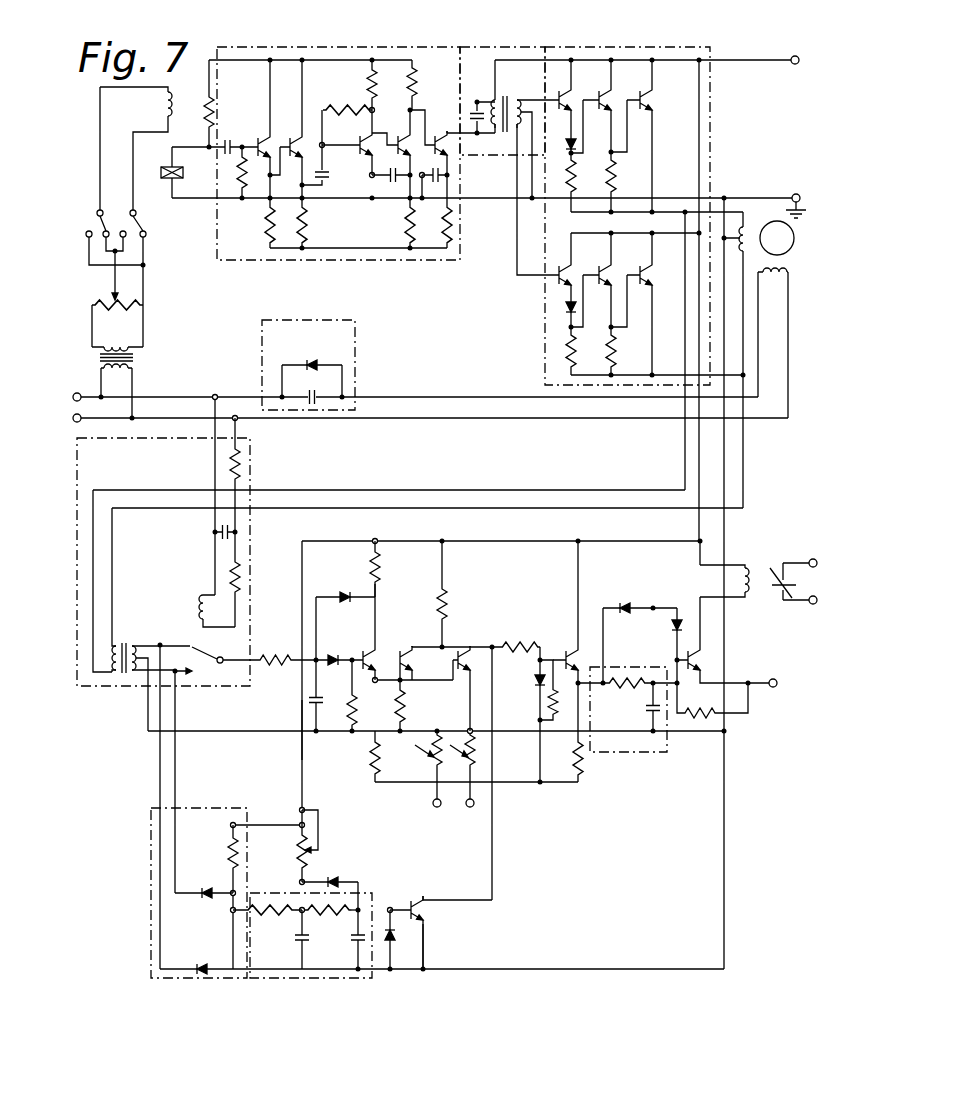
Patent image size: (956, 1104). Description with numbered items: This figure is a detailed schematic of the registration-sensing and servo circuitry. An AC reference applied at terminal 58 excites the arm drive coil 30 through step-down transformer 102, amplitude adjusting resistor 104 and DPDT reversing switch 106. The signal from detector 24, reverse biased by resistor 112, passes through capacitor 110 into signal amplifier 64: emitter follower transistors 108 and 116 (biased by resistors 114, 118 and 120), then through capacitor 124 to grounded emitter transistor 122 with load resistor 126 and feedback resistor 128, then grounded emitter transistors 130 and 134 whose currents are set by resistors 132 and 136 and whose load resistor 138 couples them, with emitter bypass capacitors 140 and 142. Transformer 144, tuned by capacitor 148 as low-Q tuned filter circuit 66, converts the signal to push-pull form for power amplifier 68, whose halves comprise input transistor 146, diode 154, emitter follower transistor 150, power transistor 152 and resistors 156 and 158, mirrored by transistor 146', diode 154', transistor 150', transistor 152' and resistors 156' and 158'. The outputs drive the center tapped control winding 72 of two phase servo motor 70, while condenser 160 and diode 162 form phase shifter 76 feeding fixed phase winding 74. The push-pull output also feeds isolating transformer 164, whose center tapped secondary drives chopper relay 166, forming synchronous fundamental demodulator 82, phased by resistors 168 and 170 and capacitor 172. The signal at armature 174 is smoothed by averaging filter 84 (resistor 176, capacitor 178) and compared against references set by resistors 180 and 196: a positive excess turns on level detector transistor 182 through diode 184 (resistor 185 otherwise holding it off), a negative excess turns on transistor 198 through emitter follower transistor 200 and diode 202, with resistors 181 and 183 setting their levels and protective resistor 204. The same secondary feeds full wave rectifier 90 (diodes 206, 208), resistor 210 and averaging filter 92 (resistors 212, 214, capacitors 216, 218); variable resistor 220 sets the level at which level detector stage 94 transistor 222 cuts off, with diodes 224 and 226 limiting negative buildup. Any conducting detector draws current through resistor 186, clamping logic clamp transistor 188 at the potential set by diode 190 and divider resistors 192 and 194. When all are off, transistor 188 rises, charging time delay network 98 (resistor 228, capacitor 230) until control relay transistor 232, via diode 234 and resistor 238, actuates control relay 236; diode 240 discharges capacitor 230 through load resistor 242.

The detector 24 is at (168, 167).
The arm drive coil 30 is at (168, 106).
The terminal 58 is at (72, 397).
The signal amplifier 64 is at (327, 46).
The low-Q tuned filter circuit 66 is at (478, 43).
The power amplifier 68 is at (680, 45).
The two phase servo motor 70 is at (816, 240).
The control winding 72 is at (746, 226).
The fixed phase winding 74 is at (774, 276).
The phase shifter 76 is at (262, 342).
The synchronous fundamental demodulator 82 is at (112, 688).
The averaging filter 84 is at (298, 722).
The full wave rectifier 90 is at (166, 978).
The averaging filter 92 is at (280, 978).
The level detector stage 94 is at (432, 926).
The time delay network 98 is at (657, 754).
The step-down transformer 102 is at (132, 357).
The amplitude adjusting resistor 104 is at (96, 303).
The DPDT reversing switch 106 is at (96, 210).
The emitter follower transistor 108 is at (262, 131).
The capacitor 110 is at (228, 139).
The resistor 112 is at (207, 98).
The resistor 114 is at (240, 172).
The emitter follower transistor 116 is at (293, 133).
The resistor 118 is at (268, 212).
The resistor 120 is at (304, 212).
The grounded emitter transistor 122 is at (368, 158).
The capacitor 124 is at (326, 180).
The load resistor 126 is at (370, 82).
The feedback resistor 128 is at (340, 114).
The grounded emitter transistor 130 is at (400, 131).
The resistor 132 is at (408, 230).
The grounded emitter transistor 134 is at (447, 131).
The resistor 136 is at (449, 222).
The load resistor 138 is at (414, 82).
The emitter bypass capacitor 140 is at (388, 180).
The emitter bypass capacitor 142 is at (440, 178).
The transformer 144 is at (508, 96).
The input transistor 146 is at (580, 99).
The capacitor 148 is at (477, 102).
The emitter follower transistor 150 is at (608, 106).
The power transistor 152 is at (649, 136).
The diode 154 is at (586, 153).
The resistor 156 is at (562, 189).
The resistor 158 is at (626, 182).
The input transistor 146' is at (582, 267).
The emitter follower transistor 150' is at (609, 280).
The power transistor 152' is at (631, 296).
The diode 154' is at (538, 308).
The resistor 156' is at (538, 351).
The resistor 158' is at (628, 351).
The condenser 160 is at (311, 391).
The diode 162 is at (312, 362).
The isolating transformer 164 is at (124, 643).
The chopper relay 166 is at (200, 610).
The resistor 168 is at (240, 462).
The resistor 170 is at (240, 578).
The capacitor 172 is at (220, 530).
The armature 174 is at (210, 664).
The resistor 176 is at (276, 655).
The capacitor 178 is at (308, 698).
The resistor 180 is at (433, 802).
The resistor 181 is at (350, 722).
The level detector transistor 182 is at (404, 651).
The resistor 183 is at (372, 762).
The diode 184 is at (342, 592).
The resistor 185 is at (401, 732).
The resistor 186 is at (440, 597).
The logic clamp transistor 188 is at (568, 648).
The diode 190 is at (536, 680).
The divider resistor 192 is at (505, 640).
The divider resistor 194 is at (550, 708).
The resistor 196 is at (474, 780).
The level detector transistor 198 is at (470, 676).
The emitter follower transistor 200 is at (362, 646).
The diode 202 is at (334, 655).
The protective resistor 204 is at (380, 562).
The full wave rectifier diode 206 is at (208, 898).
The full wave rectifier diode 208 is at (200, 964).
The resistor 210 is at (231, 850).
The resistor 212 is at (268, 906).
The resistor 214 is at (325, 918).
The capacitor 216 is at (295, 938).
The capacitor 218 is at (355, 940).
The variable resistor 220 is at (305, 850).
The level detector transistor 222 is at (418, 896).
The diode 224 is at (395, 950).
The diode 226 is at (336, 878).
The time delay resistor 228 is at (615, 688).
The time delay capacitor 230 is at (648, 710).
The control relay transistor 232 is at (705, 660).
The diode 234 is at (678, 618).
The control relay 236 is at (758, 600).
The resistor 238 is at (706, 722).
The diode 240 is at (628, 603).
The load resistor 242 is at (582, 762).